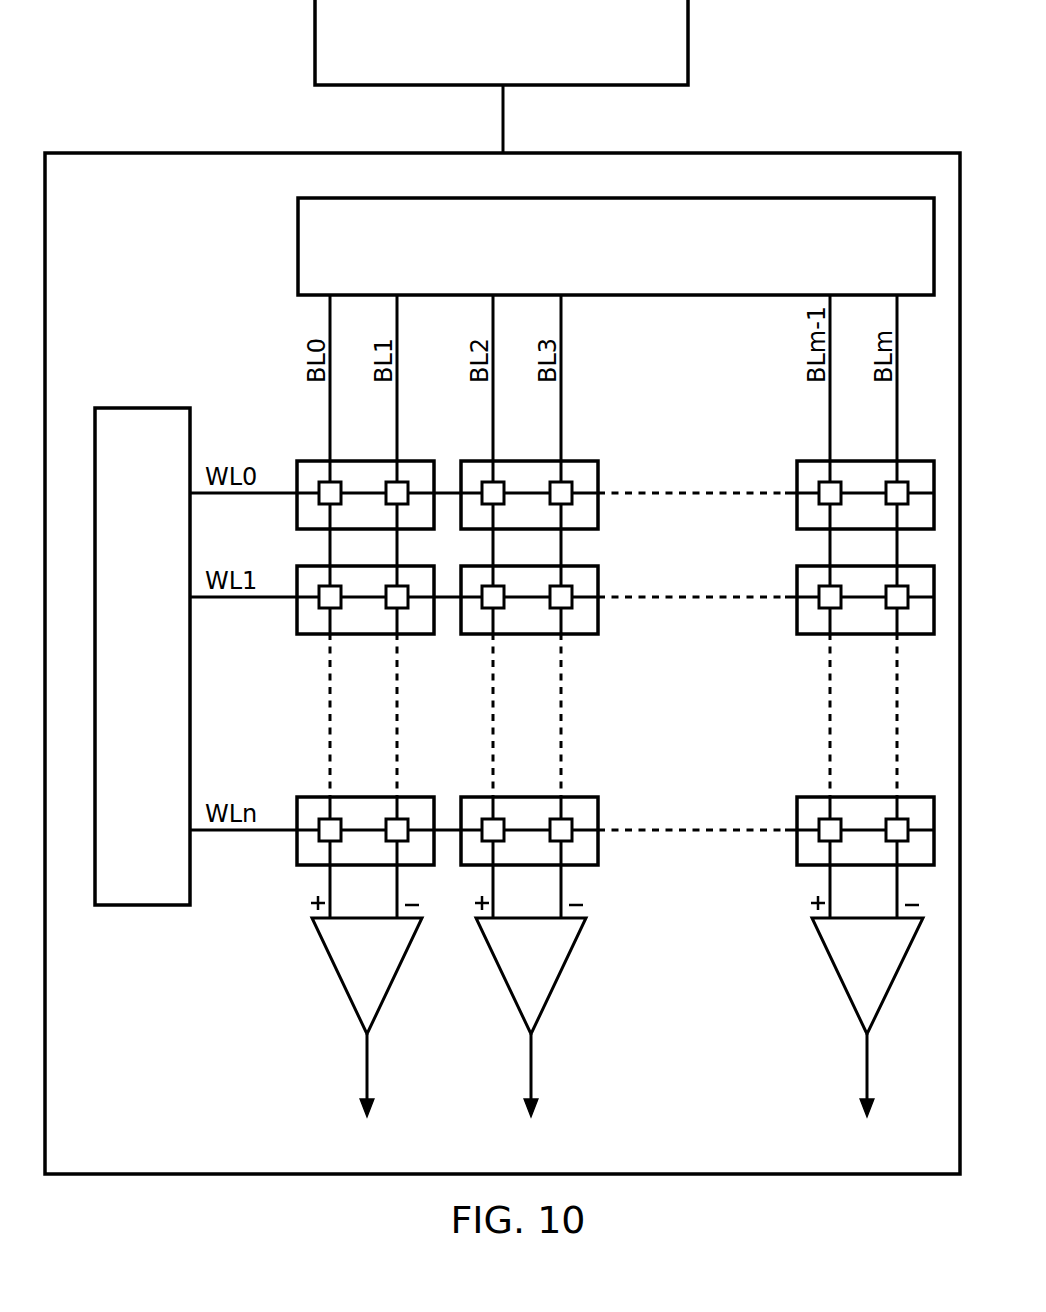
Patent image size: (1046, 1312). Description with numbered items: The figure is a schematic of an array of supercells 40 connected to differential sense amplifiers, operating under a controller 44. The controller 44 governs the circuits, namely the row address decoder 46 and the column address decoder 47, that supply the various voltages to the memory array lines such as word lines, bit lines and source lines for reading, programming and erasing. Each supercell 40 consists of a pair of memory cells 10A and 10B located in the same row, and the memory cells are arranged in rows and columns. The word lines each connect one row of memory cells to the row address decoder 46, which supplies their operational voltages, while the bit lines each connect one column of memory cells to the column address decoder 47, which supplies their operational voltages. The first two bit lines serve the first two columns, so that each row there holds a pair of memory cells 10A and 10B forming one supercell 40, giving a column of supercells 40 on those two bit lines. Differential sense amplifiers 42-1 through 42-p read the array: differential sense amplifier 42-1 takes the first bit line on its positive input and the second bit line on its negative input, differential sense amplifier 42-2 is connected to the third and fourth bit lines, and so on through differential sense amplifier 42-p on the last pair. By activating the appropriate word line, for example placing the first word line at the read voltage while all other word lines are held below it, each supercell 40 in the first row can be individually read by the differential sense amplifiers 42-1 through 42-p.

The controller 44 is at (488, 70).
The column address decoder 47 is at (601, 282).
The row address decoder 46 is at (176, 645).
The supercell 40 is at (358, 461).
The memory cell 10A is at (319, 482).
The memory cell 10B is at (405, 482).
The differential sense amplifier 42-1 is at (338, 957).
The differential sense amplifier 42-2 is at (502, 957).
The differential sense amplifier 42-p is at (838, 957).